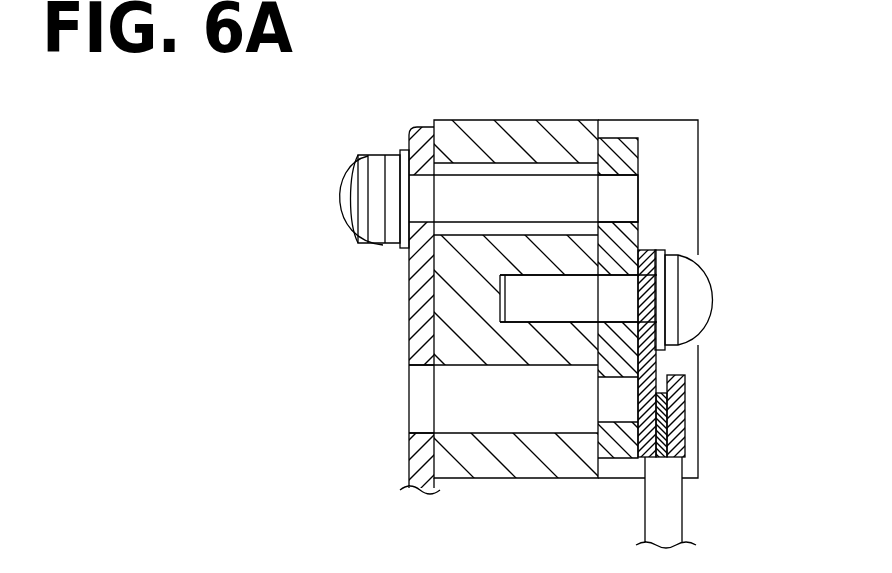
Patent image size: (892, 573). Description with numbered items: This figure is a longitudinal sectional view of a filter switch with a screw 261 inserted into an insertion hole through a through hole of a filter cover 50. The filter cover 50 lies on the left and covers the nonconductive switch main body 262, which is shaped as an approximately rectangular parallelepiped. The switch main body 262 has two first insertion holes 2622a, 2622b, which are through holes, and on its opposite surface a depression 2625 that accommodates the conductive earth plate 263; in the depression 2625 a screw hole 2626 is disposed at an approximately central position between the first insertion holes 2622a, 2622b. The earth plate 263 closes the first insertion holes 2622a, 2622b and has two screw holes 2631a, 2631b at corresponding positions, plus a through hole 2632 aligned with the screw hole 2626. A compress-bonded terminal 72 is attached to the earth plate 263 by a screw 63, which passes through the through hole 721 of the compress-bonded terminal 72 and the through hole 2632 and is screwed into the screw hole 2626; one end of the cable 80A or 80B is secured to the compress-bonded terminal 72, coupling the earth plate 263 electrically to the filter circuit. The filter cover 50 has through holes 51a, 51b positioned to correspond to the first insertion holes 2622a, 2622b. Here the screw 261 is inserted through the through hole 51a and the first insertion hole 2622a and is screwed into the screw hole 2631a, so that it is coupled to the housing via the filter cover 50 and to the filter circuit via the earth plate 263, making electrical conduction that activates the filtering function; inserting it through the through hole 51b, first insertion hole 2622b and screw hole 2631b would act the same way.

The filter cover 50 is at (421, 120).
The switch main body 262 is at (567, 108).
The earth plate 263 is at (618, 135).
The depression 2625 is at (685, 135).
The through hole 51a is at (455, 199).
The screw 261 is at (412, 172).
The first insertion hole 2622a is at (437, 232).
The screw hole 2631a is at (627, 218).
The screw 63 is at (702, 298).
The through hole 721 is at (657, 319).
The compress-bonded terminal 72 is at (686, 376).
The screw hole 2631b is at (625, 417).
The through hole 51b is at (430, 372).
The first insertion hole 2622b is at (440, 433).
The screw hole 2626 is at (552, 313).
The through hole 2632 is at (617, 324).
The cable 80A is at (733, 502).
The cable 80B is at (670, 500).